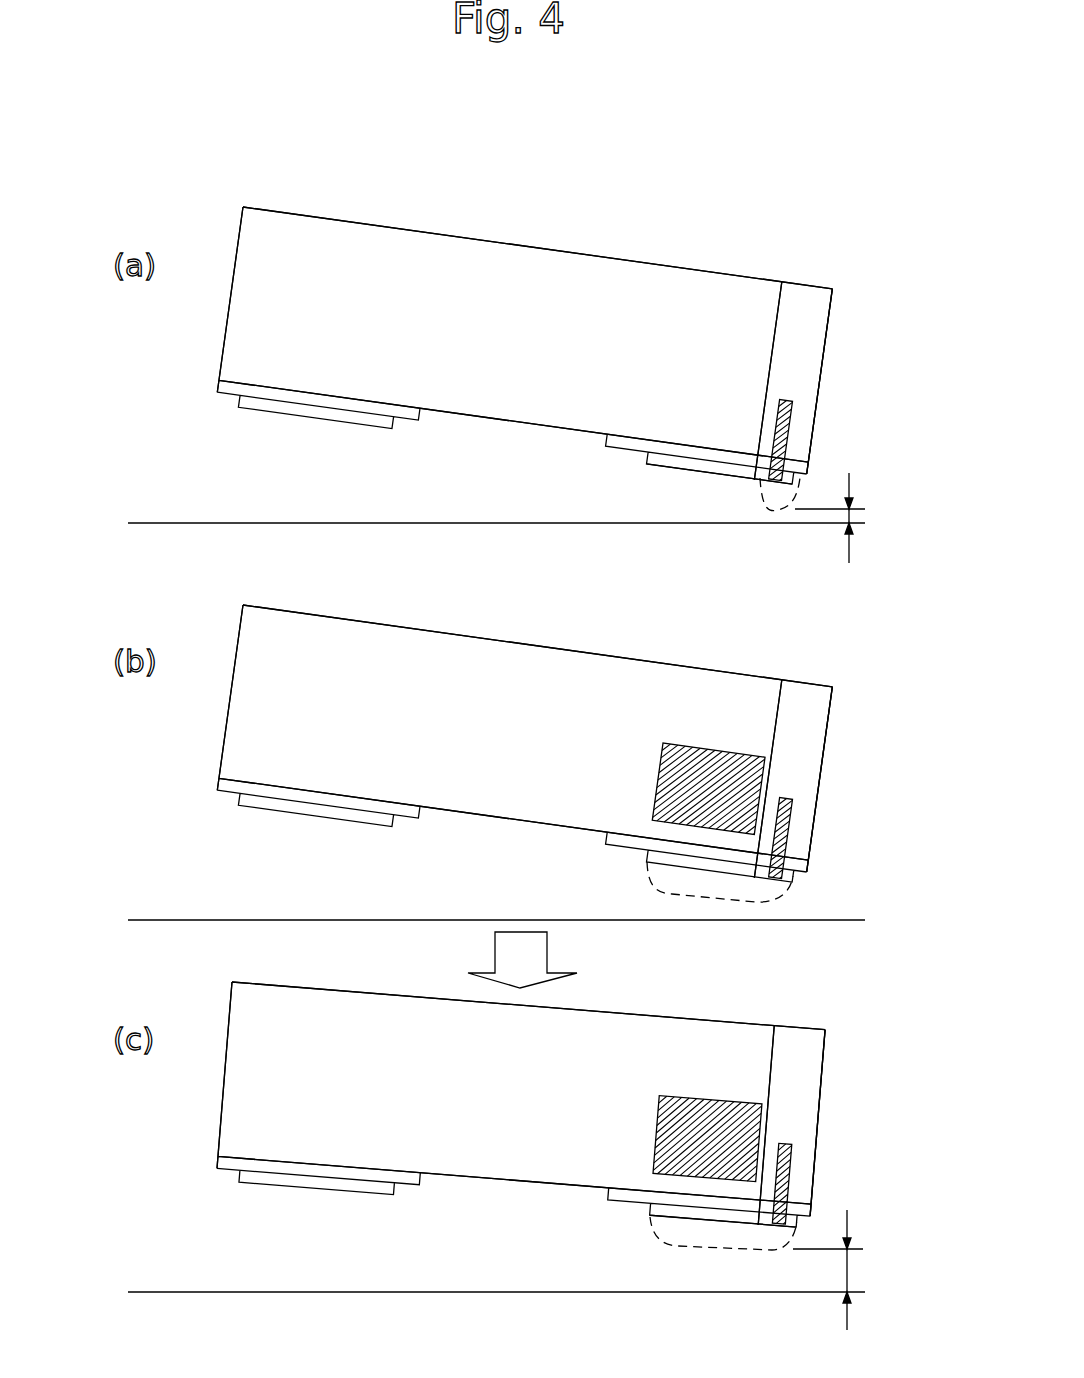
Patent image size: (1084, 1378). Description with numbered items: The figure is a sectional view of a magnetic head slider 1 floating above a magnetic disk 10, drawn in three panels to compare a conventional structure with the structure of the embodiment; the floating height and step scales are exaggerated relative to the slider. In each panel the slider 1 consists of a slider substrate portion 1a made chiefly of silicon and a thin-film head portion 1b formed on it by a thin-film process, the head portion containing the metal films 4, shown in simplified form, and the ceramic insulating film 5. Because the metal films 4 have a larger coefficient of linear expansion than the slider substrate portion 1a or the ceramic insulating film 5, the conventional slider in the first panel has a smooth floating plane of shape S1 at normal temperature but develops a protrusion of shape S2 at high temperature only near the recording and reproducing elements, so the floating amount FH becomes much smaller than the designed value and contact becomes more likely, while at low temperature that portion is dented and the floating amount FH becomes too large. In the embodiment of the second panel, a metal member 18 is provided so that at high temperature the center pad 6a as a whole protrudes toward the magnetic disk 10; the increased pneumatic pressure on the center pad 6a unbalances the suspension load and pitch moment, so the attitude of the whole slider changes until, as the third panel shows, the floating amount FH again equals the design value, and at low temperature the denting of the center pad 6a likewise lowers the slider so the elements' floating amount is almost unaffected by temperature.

The magnetic head slider 1 is at (759, 273).
The slider substrate portion 1a is at (562, 280).
The thin-film head portion 1b is at (808, 305).
The metal film 4 is at (786, 400).
The ceramic insulating film 5 is at (805, 337).
The center pad 6a is at (703, 473).
The magnetic disk 10 is at (542, 566).
The metal member 18 is at (697, 757).
The shape at normal temperature S1 is at (810, 447).
The protrusion shape S2 is at (800, 497).
The floating amount FH is at (855, 901).